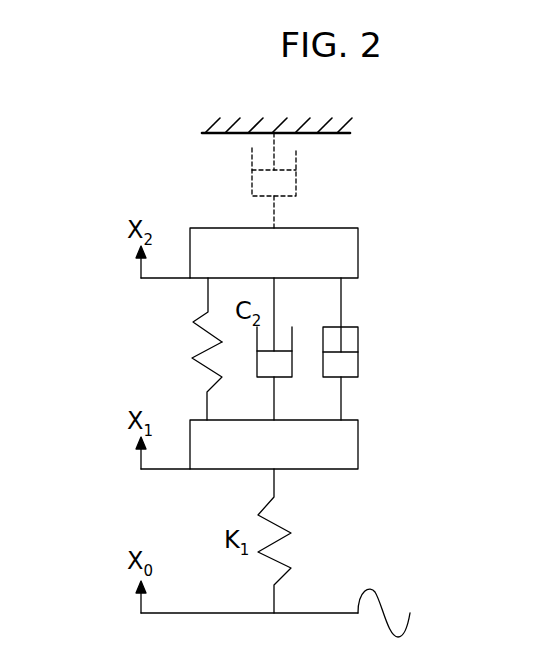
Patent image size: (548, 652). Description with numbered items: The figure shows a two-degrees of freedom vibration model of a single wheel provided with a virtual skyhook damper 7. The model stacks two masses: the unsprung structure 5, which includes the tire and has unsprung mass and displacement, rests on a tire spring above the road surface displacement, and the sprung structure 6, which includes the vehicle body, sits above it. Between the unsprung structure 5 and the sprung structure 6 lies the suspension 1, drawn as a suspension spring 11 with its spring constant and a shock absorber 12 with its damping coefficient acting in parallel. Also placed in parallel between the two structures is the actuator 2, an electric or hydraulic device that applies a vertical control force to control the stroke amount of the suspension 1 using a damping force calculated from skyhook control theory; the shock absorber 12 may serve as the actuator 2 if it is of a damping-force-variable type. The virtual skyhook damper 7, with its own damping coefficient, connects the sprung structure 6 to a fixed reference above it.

The suspension 1 is at (130, 349).
The suspension spring 11 is at (196, 318).
The shock absorber 12 is at (226, 358).
The actuator 2 is at (358, 333).
The unsprung structure 5 is at (358, 443).
The sprung structure 6 is at (358, 250).
The virtual skyhook damper 7 is at (297, 180).